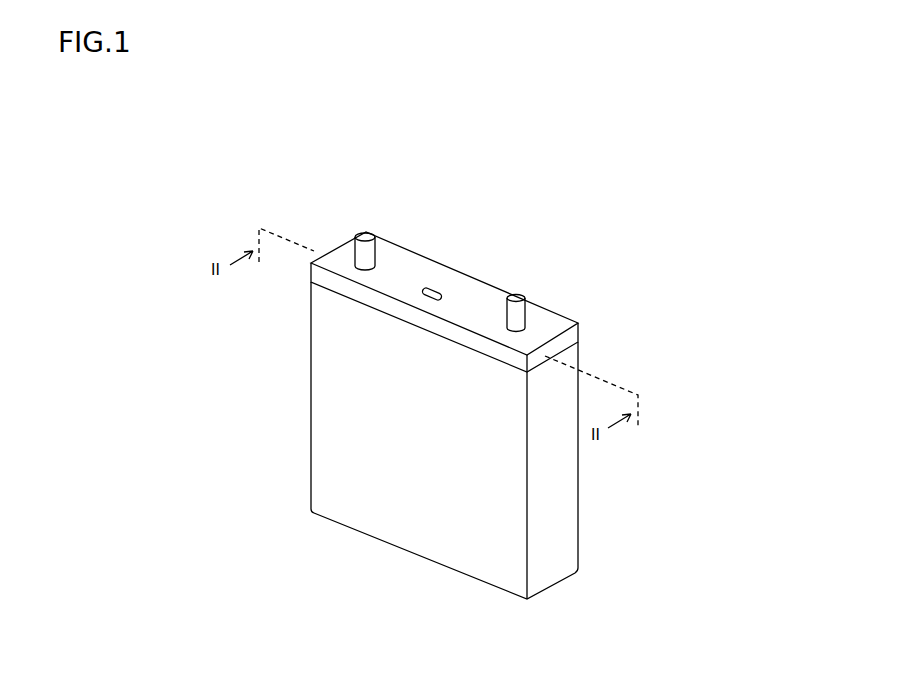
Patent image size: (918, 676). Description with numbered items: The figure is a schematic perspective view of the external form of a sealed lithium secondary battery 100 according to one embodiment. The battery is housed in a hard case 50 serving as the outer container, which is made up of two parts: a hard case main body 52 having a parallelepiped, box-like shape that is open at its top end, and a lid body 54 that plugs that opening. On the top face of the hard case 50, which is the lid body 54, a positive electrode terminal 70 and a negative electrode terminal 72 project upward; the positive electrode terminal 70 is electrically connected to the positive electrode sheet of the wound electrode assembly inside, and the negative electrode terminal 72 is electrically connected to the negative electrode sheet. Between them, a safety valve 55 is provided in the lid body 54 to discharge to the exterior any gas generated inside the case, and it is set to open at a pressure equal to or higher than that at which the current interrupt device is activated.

The sealed lithium secondary battery 100 is at (697, 197).
The hard case 50 is at (418, 522).
The hard case main body 52 is at (572, 538).
The lid body 54 is at (582, 332).
The safety valve 55 is at (433, 287).
The positive electrode terminal 70 is at (367, 232).
The negative electrode terminal 72 is at (518, 293).